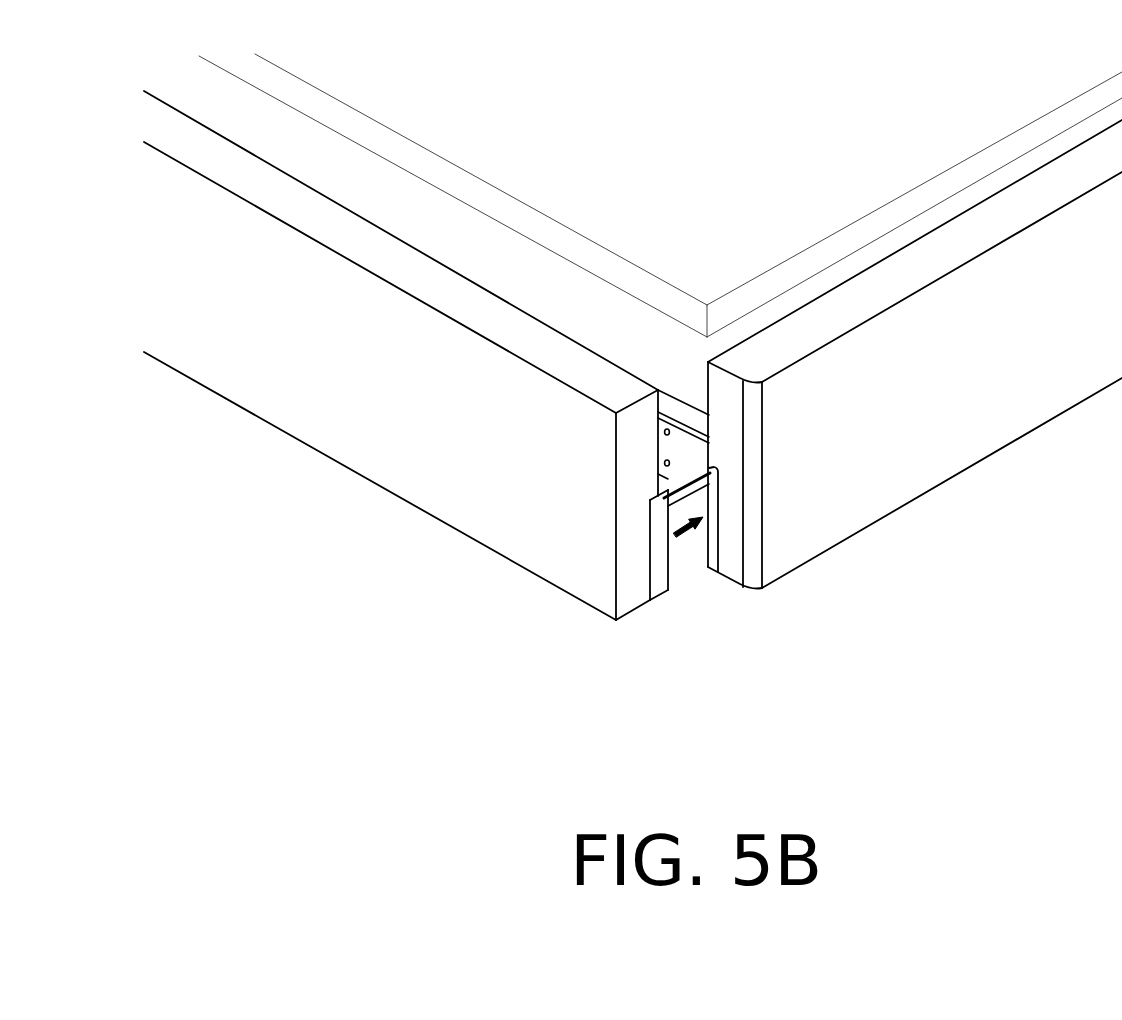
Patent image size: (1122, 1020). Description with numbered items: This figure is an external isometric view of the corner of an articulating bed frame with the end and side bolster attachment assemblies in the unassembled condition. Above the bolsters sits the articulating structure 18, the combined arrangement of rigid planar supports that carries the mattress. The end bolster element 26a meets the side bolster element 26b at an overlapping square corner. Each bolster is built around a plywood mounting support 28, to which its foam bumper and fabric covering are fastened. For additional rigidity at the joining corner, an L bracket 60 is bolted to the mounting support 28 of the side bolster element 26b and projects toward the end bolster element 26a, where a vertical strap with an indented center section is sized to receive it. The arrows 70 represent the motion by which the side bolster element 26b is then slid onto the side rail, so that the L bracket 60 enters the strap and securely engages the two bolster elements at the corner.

The articulating structure 18 is at (800, 190).
The end bolster element 26a is at (800, 500).
The side bolster element 26b is at (568, 532).
The mounting support 28 is at (660, 578).
The L bracket 60 is at (686, 490).
The arrows 70 is at (690, 540).